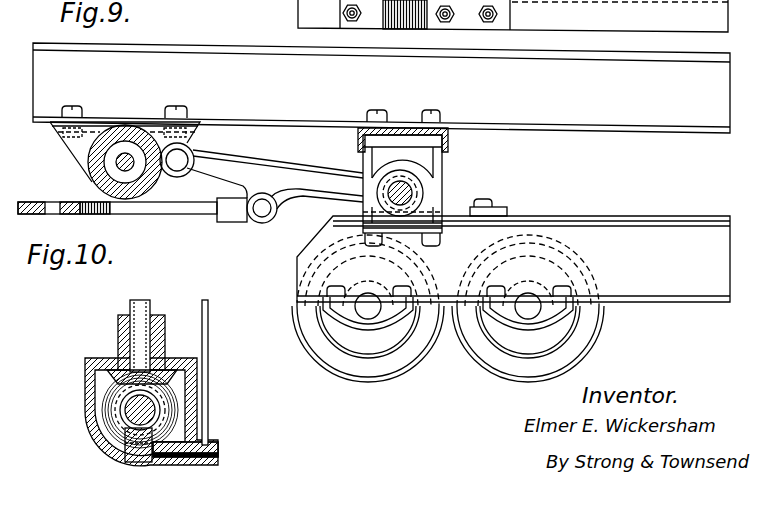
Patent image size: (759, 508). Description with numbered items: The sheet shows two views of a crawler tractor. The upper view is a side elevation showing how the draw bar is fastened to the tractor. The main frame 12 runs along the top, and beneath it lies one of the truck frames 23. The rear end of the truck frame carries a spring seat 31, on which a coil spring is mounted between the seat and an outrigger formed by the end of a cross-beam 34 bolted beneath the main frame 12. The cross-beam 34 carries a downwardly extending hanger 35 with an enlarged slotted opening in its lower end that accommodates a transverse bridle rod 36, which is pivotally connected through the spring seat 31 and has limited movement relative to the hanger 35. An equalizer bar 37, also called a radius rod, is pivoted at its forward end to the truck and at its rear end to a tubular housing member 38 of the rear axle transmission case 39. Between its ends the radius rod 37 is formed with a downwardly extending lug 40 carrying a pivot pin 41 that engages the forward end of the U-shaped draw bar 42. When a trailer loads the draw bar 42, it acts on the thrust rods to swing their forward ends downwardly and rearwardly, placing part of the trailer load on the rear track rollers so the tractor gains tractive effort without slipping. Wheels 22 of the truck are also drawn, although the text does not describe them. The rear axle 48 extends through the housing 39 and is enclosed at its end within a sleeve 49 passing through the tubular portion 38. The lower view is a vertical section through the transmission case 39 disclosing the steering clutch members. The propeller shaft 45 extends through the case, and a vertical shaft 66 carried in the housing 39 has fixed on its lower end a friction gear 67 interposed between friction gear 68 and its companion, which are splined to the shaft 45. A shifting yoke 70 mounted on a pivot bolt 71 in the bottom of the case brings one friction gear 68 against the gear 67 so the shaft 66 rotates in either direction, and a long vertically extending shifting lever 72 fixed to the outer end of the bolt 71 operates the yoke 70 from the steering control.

In FIG. 9, the main frame 12 is at (381, 88).
In FIG. 9, the wheel 22 is at (481, 350).
In FIG. 9, the truck frames 23 is at (513, 259).
In FIG. 9, the spring seats 31 is at (494, 206).
In FIG. 9, the cross-beam 34 is at (408, 128).
In FIG. 9, the hangers 35 is at (445, 171).
In FIG. 9, the bridle rod 36 is at (417, 198).
In FIG. 9, the equalizer bars 37 is at (314, 173).
In FIG. 9, the housing members 38 is at (132, 128).
In FIG. 10, the rear axle transmission case 39 is at (138, 412).
In FIG. 9, the lugs 40 is at (317, 205).
In FIG. 9, the pivot pins 41 is at (262, 224).
In FIG. 9, the draw bar 42 is at (193, 215).
In FIG. 10, the propeller shaft 45 is at (132, 410).
In FIG. 9, the rear axle 48 is at (116, 162).
In FIG. 9, the sleeve 49 is at (99, 178).
In FIG. 10, the vertical shaft 66 is at (143, 308).
In FIG. 10, the friction gear 67 is at (166, 376).
In FIG. 10, the friction gear 68 is at (108, 428).
In FIG. 10, the shifting yoke 70 is at (138, 460).
In FIG. 10, the pivot bolt 71 is at (185, 467).
In FIG. 10, the shifting lever 72 is at (212, 381).